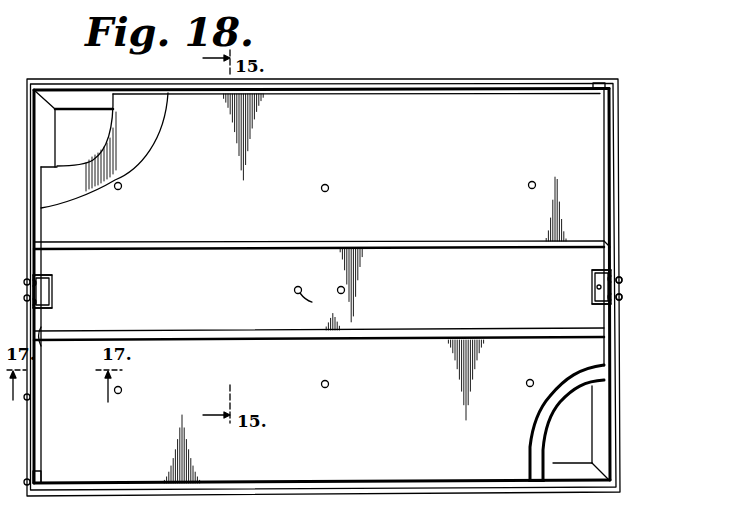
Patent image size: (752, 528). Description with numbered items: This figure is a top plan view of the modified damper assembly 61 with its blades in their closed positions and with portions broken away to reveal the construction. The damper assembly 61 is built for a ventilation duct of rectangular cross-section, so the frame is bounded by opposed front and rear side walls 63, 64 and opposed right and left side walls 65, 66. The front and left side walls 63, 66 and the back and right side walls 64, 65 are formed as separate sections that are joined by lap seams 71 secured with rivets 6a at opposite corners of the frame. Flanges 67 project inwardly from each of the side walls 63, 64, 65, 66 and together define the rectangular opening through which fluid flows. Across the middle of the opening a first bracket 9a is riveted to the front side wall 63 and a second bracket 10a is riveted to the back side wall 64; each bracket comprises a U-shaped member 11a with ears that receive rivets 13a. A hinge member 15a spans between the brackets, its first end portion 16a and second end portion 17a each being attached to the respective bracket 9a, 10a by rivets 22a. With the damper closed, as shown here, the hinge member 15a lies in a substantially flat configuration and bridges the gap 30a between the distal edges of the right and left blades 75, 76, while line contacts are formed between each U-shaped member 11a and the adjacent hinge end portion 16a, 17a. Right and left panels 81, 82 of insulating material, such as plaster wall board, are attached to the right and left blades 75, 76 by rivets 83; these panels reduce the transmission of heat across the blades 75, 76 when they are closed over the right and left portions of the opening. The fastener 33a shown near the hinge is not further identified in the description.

The damper assembly 61 is at (633, 70).
The lap seam 71 is at (620, 80).
The rivet 6a is at (603, 79).
The left side wall 66 is at (356, 78).
The left panel 82 is at (415, 104).
The rear side wall 64 is at (620, 173).
The right side wall 65 is at (335, 495).
The front side wall 63 is at (30, 397).
The flange 67 is at (93, 114).
The left blade 76 is at (142, 137).
The rivet 83 is at (120, 189).
The gap 30a is at (491, 249).
The hinge member 15a is at (243, 305).
The fastener 33a is at (340, 293).
The U-shaped member 11a is at (52, 276).
The rivet 22a is at (52, 290).
The second bracket 10a is at (50, 309).
The first bracket 9a is at (598, 306).
The first end portion 16a is at (612, 250).
The rivet 13a is at (622, 297).
The second end portion 17a is at (41, 341).
The right panel 81 is at (398, 440).
The right blade 75 is at (536, 456).